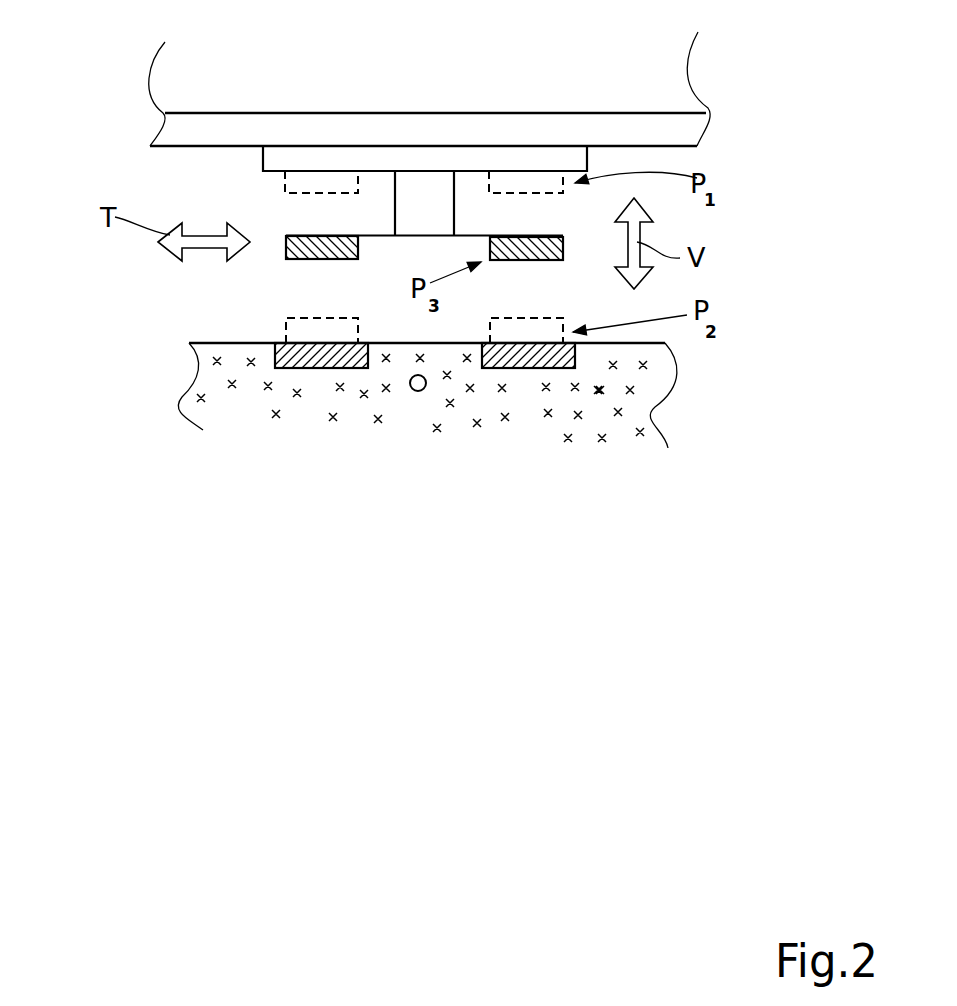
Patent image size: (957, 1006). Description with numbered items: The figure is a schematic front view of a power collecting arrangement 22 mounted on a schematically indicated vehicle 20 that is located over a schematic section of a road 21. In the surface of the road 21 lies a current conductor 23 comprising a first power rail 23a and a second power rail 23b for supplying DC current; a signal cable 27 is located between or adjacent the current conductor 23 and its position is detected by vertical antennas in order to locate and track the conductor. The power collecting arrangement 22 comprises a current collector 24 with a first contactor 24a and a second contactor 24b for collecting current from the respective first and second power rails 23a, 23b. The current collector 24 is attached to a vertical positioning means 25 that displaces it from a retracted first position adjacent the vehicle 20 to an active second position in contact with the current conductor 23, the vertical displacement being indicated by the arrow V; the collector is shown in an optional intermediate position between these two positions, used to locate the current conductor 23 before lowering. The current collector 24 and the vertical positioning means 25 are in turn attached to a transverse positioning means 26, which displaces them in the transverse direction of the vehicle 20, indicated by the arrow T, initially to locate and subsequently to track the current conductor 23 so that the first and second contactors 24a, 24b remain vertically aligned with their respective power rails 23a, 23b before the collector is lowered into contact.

The vehicle 20 is at (677, 126).
The road 21 is at (650, 400).
The power collecting arrangement 22 is at (210, 187).
The current conductor 23 is at (285, 387).
The first power rail 23a is at (322, 368).
The second power rail 23b is at (538, 368).
The current collector 24 is at (282, 273).
The first contactor 24a is at (315, 245).
The second contactor 24b is at (537, 240).
The vertical positioning means 25 is at (423, 183).
The transverse positioning means 26 is at (337, 157).
The signal cable 27 is at (418, 391).